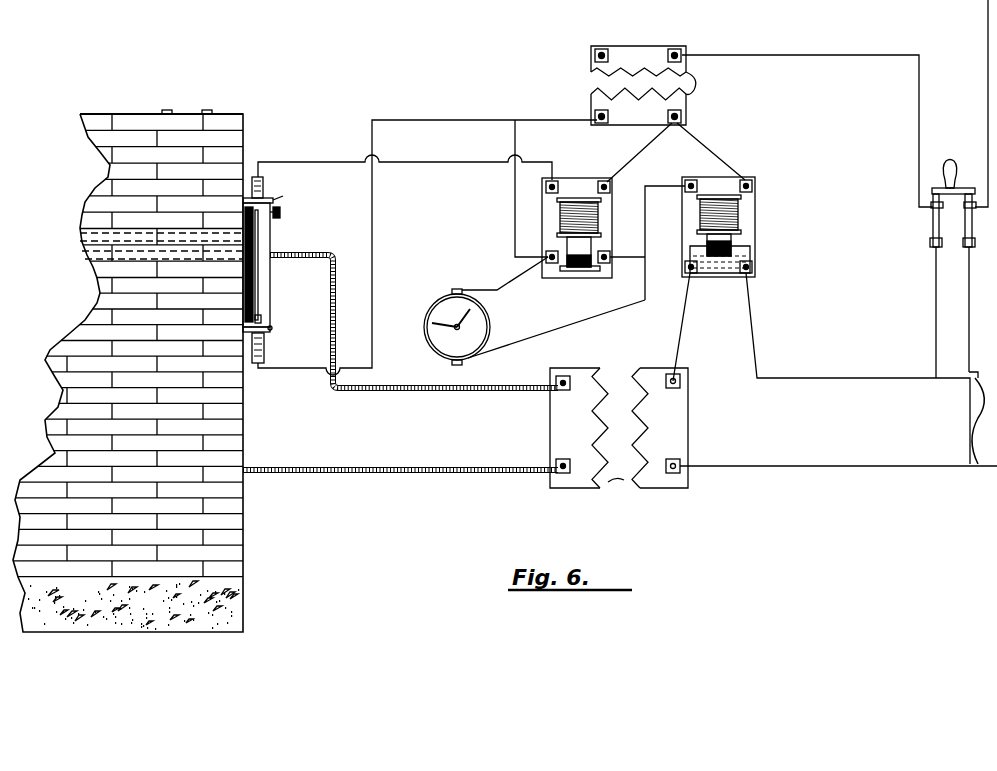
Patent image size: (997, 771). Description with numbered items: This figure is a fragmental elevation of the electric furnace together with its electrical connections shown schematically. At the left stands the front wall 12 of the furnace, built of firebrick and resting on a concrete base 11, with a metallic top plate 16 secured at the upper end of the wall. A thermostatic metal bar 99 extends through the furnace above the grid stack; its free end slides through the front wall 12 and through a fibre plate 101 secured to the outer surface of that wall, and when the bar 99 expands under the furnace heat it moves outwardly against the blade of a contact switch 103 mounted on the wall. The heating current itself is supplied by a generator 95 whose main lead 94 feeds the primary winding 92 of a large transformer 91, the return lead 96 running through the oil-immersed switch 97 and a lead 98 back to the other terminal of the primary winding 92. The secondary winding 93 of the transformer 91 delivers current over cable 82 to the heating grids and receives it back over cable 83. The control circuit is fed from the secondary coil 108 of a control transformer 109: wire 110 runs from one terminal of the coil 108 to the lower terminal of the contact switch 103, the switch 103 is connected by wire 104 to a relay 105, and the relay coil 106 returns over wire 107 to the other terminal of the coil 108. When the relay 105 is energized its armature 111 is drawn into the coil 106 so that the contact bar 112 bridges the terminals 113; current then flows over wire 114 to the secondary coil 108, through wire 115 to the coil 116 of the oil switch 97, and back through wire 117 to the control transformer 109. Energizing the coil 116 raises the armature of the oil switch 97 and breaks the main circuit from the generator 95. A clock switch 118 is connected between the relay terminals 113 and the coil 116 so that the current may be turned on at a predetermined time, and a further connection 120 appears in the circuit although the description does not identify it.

The concrete base 11 is at (243, 432).
The metallic top plate 16 is at (186, 112).
The thermostatic metal bar 99 is at (180, 238).
The contact switch 103 is at (266, 300).
The fibre plate 101 is at (255, 263).
The cable 83 is at (432, 390).
The cable 82 is at (325, 473).
The wire 104 is at (333, 162).
The wire 110 is at (455, 120).
The wire 120 is at (513, 141).
The wire 114 is at (514, 188).
The relay 105 is at (585, 178).
The terminals 113 is at (548, 257).
The relay coil 106 is at (572, 198).
The contact bar 112 is at (600, 282).
The armature 111 is at (497, 289).
The control transformer 109 is at (696, 82).
The secondary coil 108 is at (638, 88).
The wire 107 is at (642, 152).
The wire 117 is at (670, 287).
The oil switch 97 is at (755, 215).
The coil 116 is at (752, 247).
The wire 115 is at (644, 254).
The clock switch 118 is at (503, 327).
The front wall 12 is at (585, 326).
The secondary winding 93 is at (549, 430).
The primary winding 92 is at (690, 430).
The transformer 91 is at (630, 478).
The lead 98 is at (677, 337).
The return lead 96 is at (905, 378).
The main lead 94 is at (890, 466).
The generator 95 is at (963, 232).